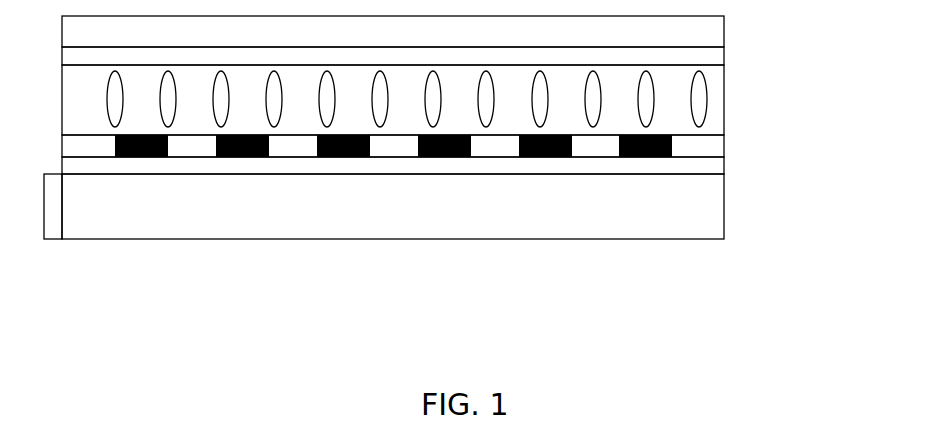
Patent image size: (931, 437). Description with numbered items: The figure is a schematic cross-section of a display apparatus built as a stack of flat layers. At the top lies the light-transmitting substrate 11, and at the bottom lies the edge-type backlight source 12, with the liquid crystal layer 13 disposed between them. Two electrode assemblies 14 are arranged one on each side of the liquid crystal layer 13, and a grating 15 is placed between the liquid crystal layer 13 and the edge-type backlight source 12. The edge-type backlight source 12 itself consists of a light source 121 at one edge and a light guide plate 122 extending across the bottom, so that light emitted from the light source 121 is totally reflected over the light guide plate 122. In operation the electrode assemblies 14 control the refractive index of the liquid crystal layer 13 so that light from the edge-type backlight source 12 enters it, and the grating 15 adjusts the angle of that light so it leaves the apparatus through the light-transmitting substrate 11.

The light-transmitting substrate 11 is at (726, 33).
The edge-type backlight source 12 is at (380, 267).
The light source 121 is at (53, 241).
The light guide plate 122 is at (116, 241).
The liquid crystal layer 13 is at (726, 97).
The electrode assemblies 14 is at (726, 57).
The grating 15 is at (726, 143).